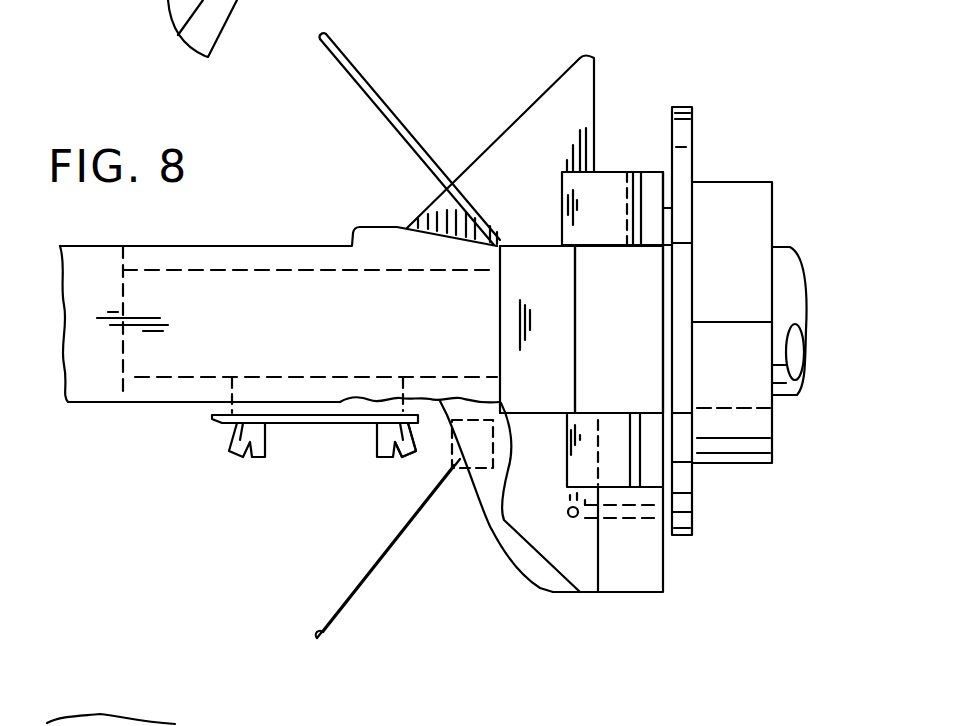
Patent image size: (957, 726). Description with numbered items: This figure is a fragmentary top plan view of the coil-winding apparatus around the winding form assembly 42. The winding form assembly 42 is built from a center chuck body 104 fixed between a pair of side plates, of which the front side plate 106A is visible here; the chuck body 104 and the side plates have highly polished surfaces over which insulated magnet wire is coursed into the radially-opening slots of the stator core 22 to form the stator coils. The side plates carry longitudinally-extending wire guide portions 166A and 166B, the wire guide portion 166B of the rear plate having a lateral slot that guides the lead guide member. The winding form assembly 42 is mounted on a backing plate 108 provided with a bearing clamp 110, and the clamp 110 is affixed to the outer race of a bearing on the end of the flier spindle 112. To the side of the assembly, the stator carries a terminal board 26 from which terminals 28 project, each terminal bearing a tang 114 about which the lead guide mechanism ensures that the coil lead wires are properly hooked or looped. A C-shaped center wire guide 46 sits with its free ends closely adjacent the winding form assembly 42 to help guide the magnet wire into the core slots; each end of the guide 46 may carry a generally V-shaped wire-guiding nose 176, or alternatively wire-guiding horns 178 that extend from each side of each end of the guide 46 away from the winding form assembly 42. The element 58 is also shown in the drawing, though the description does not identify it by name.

The stator core 22 is at (157, 357).
The terminal board 26 is at (233, 419).
The terminals 28 is at (380, 440).
The winding form assembly 42 is at (660, 595).
The center wire guide 46 is at (89, 264).
The support bracket 58 is at (527, 565).
The center chuck body 104 is at (640, 345).
The front side plate 106A is at (557, 98).
The backing plate 108 is at (682, 140).
The bearing clamp 110 is at (743, 447).
The flier spindle 112 is at (783, 258).
The tangs 114 is at (401, 442).
The wire guide portion of front side plate 166A is at (548, 188).
The wire guide portion of rear side plate 166B is at (592, 552).
The wire-guiding nose 176 is at (425, 341).
The wire-guiding horn 178 is at (350, 58).